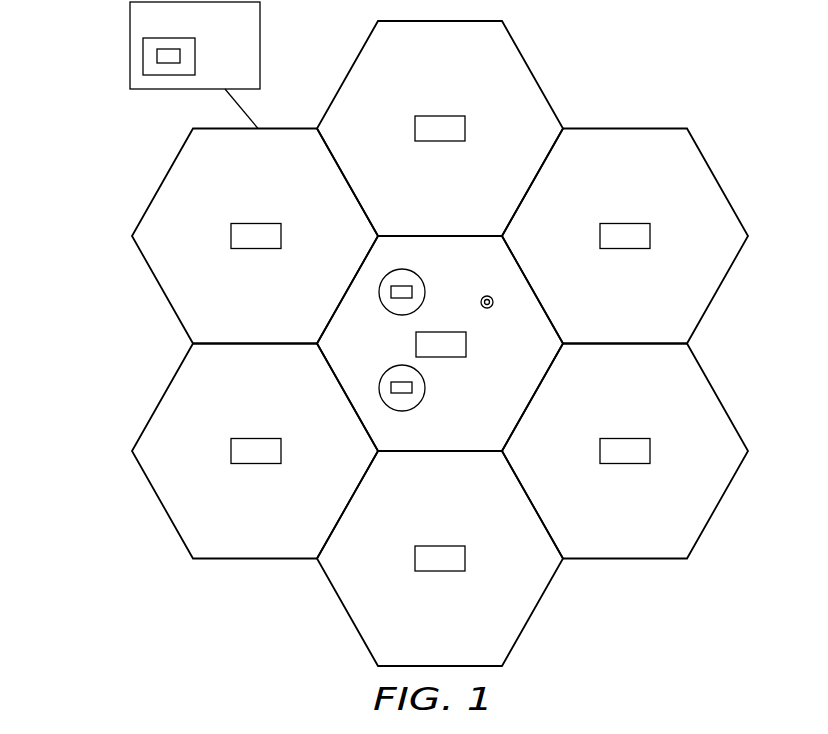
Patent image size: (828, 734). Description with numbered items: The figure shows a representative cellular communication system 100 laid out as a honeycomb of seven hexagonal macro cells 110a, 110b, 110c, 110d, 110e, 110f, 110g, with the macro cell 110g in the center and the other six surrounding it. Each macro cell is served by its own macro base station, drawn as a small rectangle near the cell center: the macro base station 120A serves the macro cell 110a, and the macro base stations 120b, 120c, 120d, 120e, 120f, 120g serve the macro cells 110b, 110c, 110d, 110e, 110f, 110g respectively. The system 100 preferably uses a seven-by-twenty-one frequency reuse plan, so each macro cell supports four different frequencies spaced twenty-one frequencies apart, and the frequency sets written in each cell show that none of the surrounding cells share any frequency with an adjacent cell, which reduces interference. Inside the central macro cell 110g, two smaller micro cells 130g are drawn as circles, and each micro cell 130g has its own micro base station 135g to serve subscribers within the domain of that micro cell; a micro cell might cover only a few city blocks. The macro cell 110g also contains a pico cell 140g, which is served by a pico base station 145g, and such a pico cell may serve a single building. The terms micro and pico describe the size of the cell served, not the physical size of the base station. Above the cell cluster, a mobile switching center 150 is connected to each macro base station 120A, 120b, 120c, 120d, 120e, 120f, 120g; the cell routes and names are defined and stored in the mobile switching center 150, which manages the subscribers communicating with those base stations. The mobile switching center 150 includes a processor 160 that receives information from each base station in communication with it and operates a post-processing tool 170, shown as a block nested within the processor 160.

The communication system 100 is at (669, 76).
The macro cell 110a is at (440, 128).
The macro cell 110b is at (625, 236).
The macro cell 110c is at (625, 451).
The macro cell 110d is at (440, 558).
The macro cell 110e is at (255, 451).
The macro cell 110f is at (255, 236).
The macro cell 110g is at (440, 343).
The macro base station 120A is at (465, 132).
The macro base station 120b is at (650, 240).
The macro base station 120c is at (650, 454).
The macro base station 120d is at (465, 562).
The macro base station 120e is at (281, 454).
The macro base station 120f is at (281, 240).
The macro base station 120g is at (466, 346).
The micro cell 130g is at (420, 273).
The micro base station 135g is at (395, 298).
The pico cell 140g is at (492, 307).
The pico base station 145g is at (481, 303).
The mobile switching center 150 is at (260, 33).
The processor 160 is at (143, 43).
The post-processing tool 170 is at (167, 63).